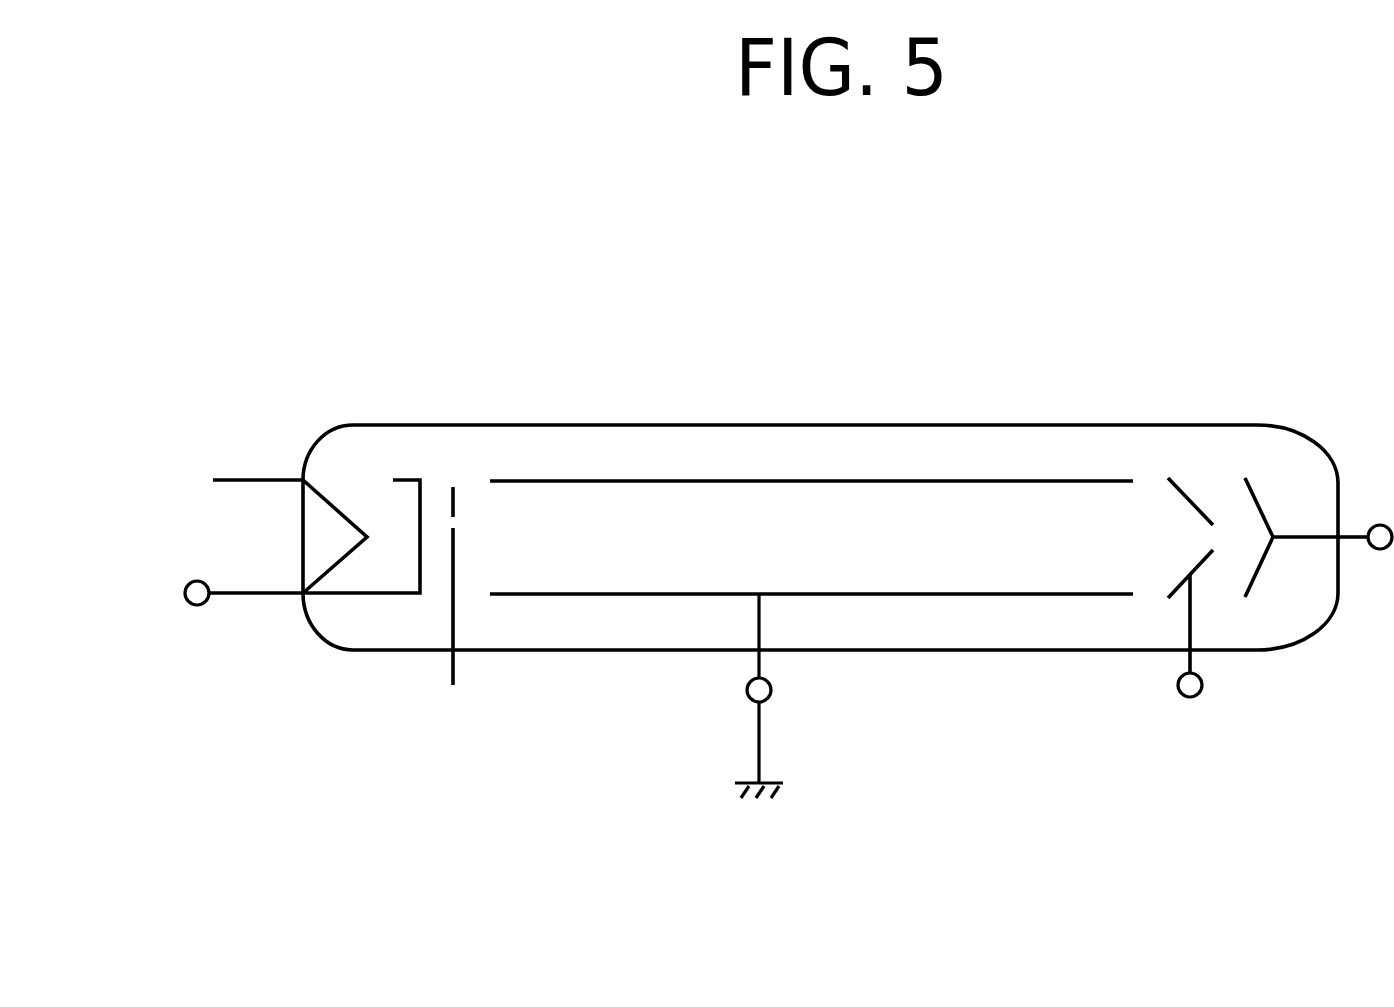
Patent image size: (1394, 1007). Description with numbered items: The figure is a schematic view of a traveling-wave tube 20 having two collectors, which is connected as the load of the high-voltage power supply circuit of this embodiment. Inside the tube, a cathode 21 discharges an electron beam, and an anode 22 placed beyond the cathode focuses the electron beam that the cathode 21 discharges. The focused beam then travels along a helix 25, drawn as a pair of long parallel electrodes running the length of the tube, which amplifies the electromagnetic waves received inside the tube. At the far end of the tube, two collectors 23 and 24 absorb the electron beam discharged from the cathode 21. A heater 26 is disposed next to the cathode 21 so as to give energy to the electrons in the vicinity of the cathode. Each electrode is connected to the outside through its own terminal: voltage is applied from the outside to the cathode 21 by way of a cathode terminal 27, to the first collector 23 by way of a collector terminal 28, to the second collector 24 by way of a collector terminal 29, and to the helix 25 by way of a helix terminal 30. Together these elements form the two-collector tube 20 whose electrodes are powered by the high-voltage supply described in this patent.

The traveling-wave tube 20 is at (925, 652).
The cathode 21 is at (384, 604).
The anode 22 is at (453, 666).
The collector 23 is at (1183, 497).
The collector 24 is at (1257, 497).
The helix 25 is at (719, 458).
The heater 26 is at (335, 503).
The cathode terminal 27 is at (200, 606).
The collector terminal 28 is at (1190, 697).
The collector terminal 29 is at (1378, 549).
The helix terminal 30 is at (746, 700).